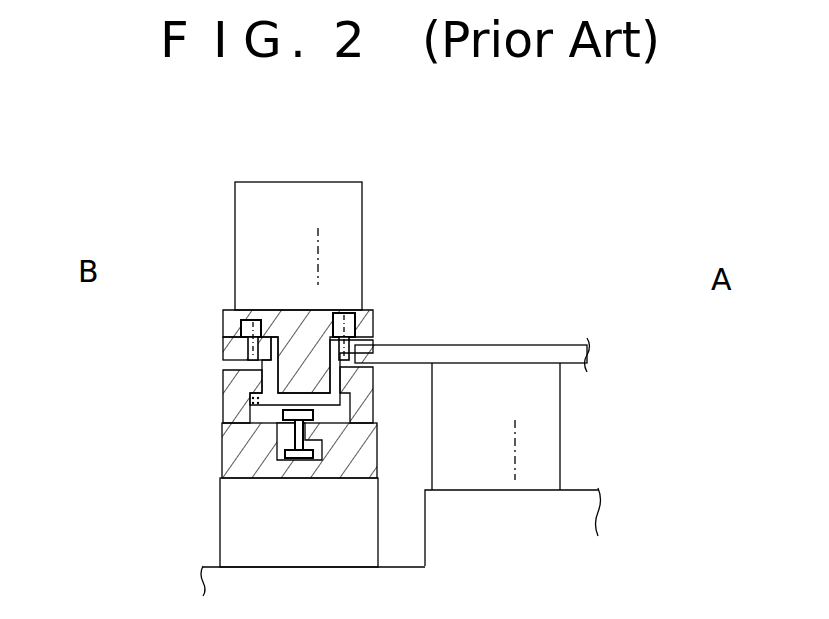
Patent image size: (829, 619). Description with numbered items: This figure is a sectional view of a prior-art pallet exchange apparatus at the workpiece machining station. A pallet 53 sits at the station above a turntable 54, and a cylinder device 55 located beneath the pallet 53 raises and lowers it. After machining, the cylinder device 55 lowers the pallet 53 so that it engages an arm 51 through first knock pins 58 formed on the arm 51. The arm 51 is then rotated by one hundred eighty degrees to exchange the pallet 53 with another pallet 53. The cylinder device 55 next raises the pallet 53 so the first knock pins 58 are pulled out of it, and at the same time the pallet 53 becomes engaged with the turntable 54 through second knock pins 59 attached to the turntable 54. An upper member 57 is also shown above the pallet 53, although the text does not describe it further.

The upper member 57 is at (278, 195).
The first knock pins 58 is at (345, 318).
The arm 51 is at (570, 345).
The pallet 53 is at (227, 326).
The second knock pins 59 is at (250, 383).
The cylinder device 55 is at (295, 440).
The turntable 54 is at (233, 520).